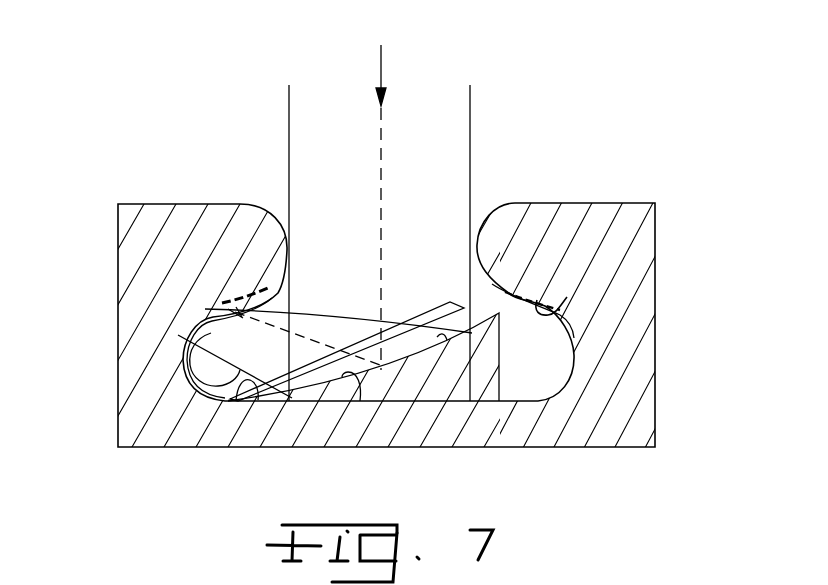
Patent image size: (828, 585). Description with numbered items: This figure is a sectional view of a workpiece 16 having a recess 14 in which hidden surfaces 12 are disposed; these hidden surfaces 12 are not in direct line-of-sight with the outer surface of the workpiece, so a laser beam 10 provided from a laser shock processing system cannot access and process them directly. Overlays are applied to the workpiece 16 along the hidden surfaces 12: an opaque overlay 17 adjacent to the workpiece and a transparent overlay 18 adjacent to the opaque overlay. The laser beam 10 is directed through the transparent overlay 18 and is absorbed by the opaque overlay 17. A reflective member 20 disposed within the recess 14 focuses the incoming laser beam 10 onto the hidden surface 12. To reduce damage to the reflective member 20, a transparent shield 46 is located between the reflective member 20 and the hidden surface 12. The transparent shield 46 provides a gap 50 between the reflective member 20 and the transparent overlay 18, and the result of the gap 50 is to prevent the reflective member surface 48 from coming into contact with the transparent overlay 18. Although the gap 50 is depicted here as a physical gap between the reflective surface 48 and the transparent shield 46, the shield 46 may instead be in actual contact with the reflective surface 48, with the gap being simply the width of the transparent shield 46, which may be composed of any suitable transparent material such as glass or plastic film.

The laser beam 10 is at (288, 128).
The hidden surface 12 is at (212, 304).
The recess 14 is at (477, 206).
The workpiece 16 is at (640, 428).
The opaque overlay 17 is at (205, 309).
The transparent overlay 18 is at (233, 330).
The reflective member 20 is at (428, 394).
The transparent shield 46 is at (236, 401).
The reflective member surface 48 is at (360, 401).
The gap 50 is at (447, 340).